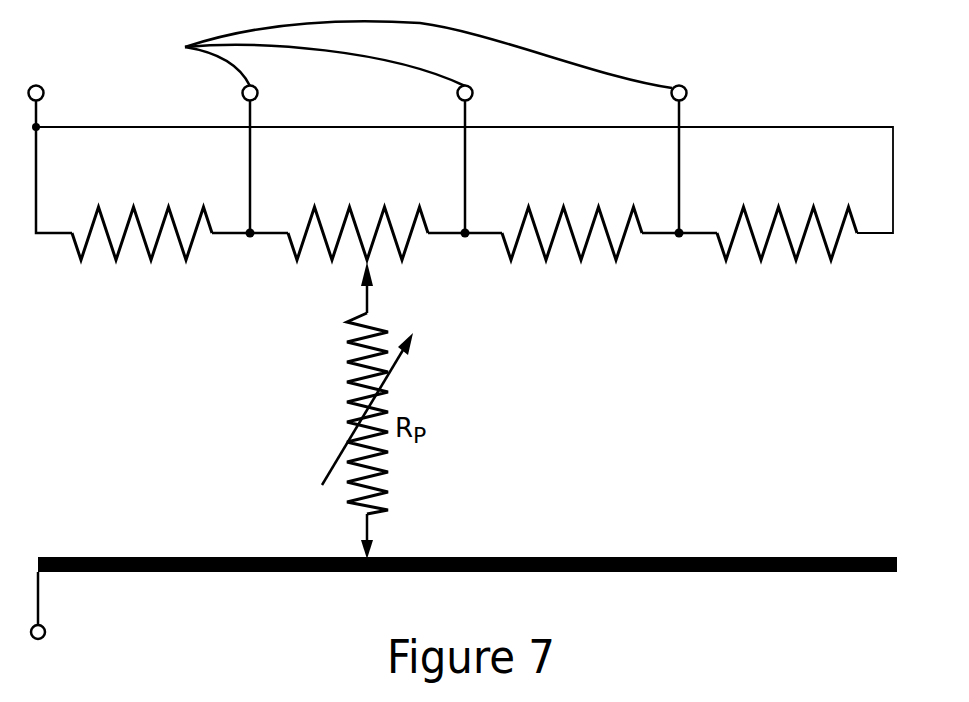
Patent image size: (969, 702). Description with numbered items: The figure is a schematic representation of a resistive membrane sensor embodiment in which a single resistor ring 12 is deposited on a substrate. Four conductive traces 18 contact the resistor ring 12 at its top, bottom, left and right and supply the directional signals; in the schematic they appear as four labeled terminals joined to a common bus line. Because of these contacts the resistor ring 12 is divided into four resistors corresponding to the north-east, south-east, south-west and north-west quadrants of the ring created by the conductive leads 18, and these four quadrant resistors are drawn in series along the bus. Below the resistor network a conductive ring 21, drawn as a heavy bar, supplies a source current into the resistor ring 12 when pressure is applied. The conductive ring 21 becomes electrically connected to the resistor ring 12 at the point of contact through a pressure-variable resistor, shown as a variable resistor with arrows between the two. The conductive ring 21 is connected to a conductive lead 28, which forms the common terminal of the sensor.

The conductive traces 18 is at (40, 86).
The resistor ring 12 is at (185, 245).
The conductive ring 21 is at (168, 557).
The conductive lead 28 is at (88, 620).